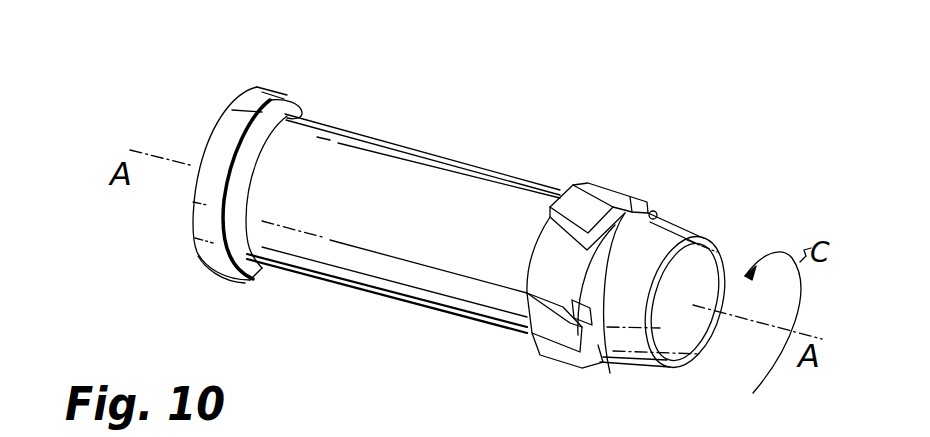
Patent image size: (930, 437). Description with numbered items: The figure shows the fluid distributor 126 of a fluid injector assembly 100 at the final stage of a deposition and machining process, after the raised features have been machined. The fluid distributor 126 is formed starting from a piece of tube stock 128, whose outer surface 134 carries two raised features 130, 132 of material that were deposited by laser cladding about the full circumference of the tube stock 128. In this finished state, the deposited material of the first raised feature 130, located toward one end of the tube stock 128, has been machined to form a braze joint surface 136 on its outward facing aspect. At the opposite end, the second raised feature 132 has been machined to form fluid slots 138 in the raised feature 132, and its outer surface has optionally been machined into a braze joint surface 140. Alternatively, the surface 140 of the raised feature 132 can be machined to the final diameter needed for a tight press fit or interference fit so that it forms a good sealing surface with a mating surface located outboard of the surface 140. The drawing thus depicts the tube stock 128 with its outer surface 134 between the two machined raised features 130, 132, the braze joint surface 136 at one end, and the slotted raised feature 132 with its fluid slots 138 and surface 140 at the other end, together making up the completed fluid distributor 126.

The connector assembly 100 is at (665, 139).
The fluid distributor 126 is at (411, 176).
The piece of tube stock 128 is at (358, 135).
The first raised feature 130 is at (212, 252).
The second raised feature 132 is at (553, 362).
The outer surface 134 is at (394, 243).
The braze joint surface 136 is at (215, 118).
The fluid slots 138 is at (542, 220).
The braze joint surface 140 is at (548, 268).